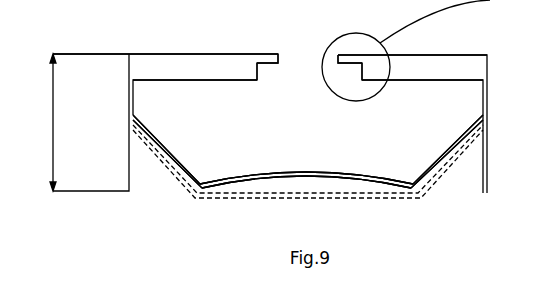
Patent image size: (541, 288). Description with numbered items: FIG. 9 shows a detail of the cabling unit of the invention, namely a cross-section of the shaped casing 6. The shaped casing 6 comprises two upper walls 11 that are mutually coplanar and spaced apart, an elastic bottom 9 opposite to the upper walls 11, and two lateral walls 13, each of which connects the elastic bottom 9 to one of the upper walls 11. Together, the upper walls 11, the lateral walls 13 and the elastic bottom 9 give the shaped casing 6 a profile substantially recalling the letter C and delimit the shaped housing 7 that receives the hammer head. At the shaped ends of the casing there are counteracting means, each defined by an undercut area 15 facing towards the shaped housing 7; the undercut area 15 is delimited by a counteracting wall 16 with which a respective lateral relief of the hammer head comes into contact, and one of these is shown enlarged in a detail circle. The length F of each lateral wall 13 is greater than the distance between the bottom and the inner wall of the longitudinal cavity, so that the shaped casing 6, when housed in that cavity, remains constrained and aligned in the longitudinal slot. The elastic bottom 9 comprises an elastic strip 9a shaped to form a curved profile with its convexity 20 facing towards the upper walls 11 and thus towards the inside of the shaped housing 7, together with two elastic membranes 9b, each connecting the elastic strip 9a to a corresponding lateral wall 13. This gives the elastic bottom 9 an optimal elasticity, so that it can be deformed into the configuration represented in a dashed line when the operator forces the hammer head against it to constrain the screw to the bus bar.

The shaped casing 6 is at (125, 35).
The shaped housing 7 is at (210, 147).
The elastic bottom 9 is at (355, 188).
The elastic strip 9a is at (267, 178).
The elastic membranes 9b is at (170, 150).
The upper walls 11 is at (176, 62).
The lateral walls 13 is at (131, 105).
The undercut area 15 is at (265, 70).
The counteracting wall 16 is at (253, 72).
The convexity 20 is at (330, 165).
The length of lateral wall F is at (54, 118).